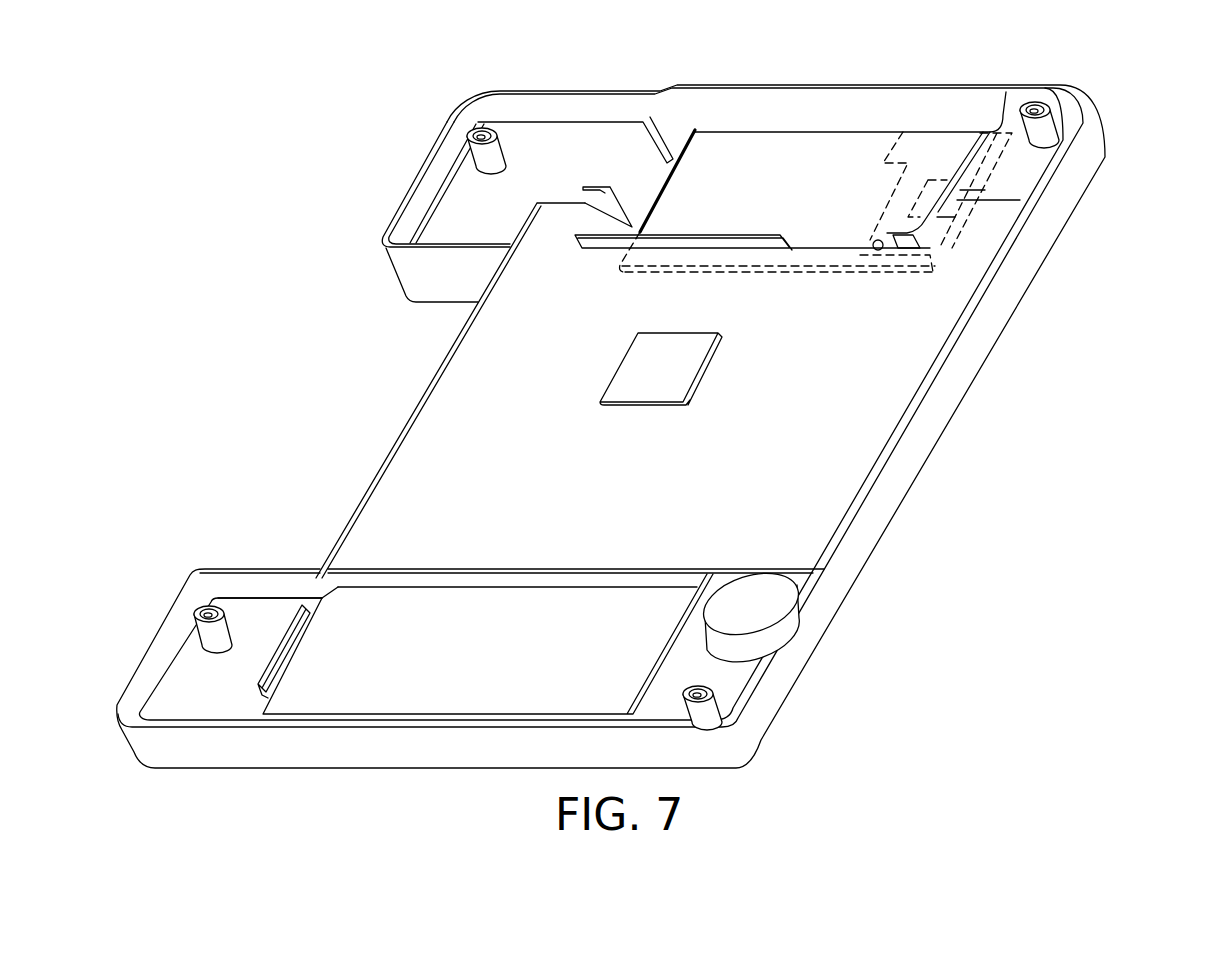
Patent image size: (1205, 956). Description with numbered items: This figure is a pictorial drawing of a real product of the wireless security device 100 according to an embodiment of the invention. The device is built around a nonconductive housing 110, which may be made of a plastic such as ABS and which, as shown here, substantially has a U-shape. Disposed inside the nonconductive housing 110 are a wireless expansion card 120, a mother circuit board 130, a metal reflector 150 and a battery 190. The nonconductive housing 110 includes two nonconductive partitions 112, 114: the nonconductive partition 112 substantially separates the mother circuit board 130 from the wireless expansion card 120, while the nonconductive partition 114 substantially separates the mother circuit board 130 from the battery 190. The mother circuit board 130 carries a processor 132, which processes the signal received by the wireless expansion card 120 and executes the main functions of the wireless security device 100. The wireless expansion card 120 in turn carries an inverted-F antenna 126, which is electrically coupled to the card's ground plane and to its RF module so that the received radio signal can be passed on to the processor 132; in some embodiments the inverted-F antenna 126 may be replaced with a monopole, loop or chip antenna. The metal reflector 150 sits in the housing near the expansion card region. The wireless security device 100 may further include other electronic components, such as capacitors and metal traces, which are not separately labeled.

The wireless security device 100 is at (283, 94).
The nonconductive housing 110 is at (581, 88).
The nonconductive partition 112 is at (746, 233).
The nonconductive partition 114 is at (540, 580).
The wireless expansion card 120 is at (833, 170).
The inverted-F antenna 126 is at (975, 157).
The mother circuit board 130 is at (830, 386).
The processor 132 is at (637, 365).
The metal reflector 150 is at (930, 243).
The battery 190 is at (448, 690).